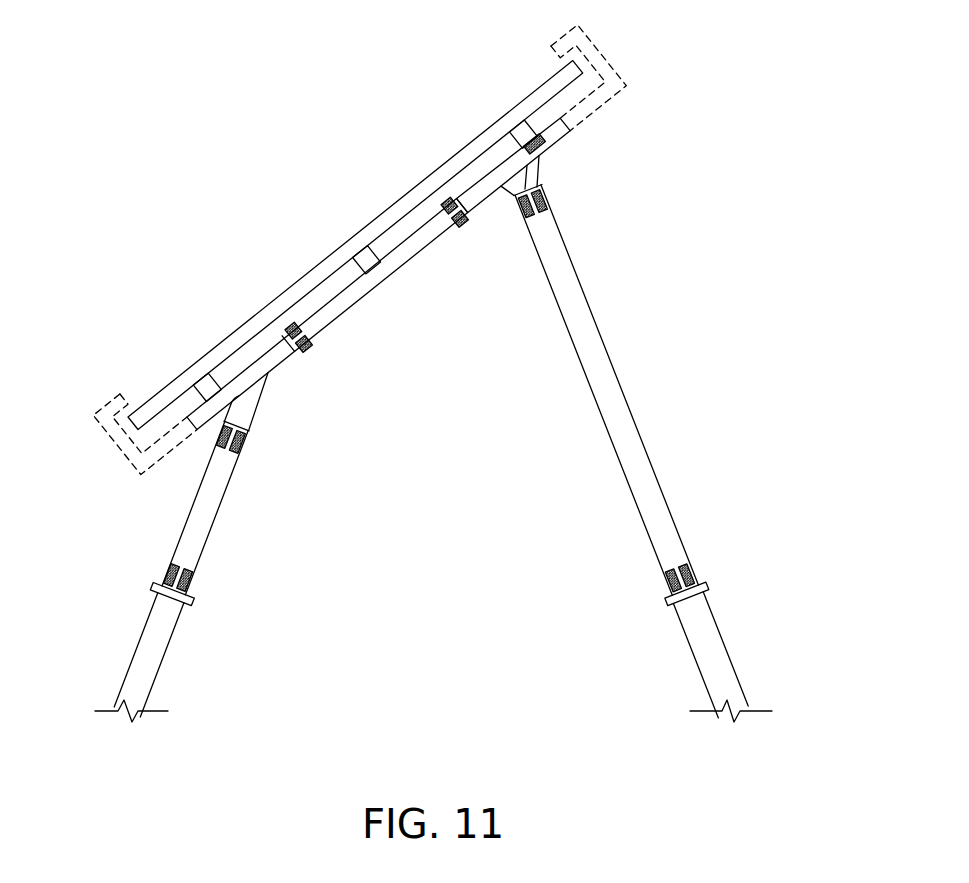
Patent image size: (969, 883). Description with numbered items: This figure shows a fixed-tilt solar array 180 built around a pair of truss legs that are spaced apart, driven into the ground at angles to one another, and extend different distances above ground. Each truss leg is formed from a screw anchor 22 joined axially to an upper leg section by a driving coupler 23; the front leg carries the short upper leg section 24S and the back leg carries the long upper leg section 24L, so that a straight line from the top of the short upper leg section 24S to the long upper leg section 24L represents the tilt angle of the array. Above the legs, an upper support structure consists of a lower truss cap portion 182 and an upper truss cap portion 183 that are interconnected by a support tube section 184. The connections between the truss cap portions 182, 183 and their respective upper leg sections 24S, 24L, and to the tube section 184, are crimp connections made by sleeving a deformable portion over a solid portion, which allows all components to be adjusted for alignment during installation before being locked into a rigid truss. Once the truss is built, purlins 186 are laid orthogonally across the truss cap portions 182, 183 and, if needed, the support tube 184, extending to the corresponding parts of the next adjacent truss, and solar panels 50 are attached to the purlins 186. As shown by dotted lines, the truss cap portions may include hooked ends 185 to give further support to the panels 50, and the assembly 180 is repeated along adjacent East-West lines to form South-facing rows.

The fixed-tilt array 180 is at (704, 144).
The solar panels 50 is at (476, 138).
The support tube section 184 is at (386, 278).
The upper truss cap portion 183 is at (491, 199).
The purlins 186 is at (513, 131).
The hooked ends 185 is at (611, 49).
The lower truss cap portion 182 is at (262, 398).
The short upper leg section 24S is at (217, 515).
The long upper leg section 24L is at (594, 400).
The driving couplers 23 is at (153, 588).
The screw anchors 22 is at (166, 657).